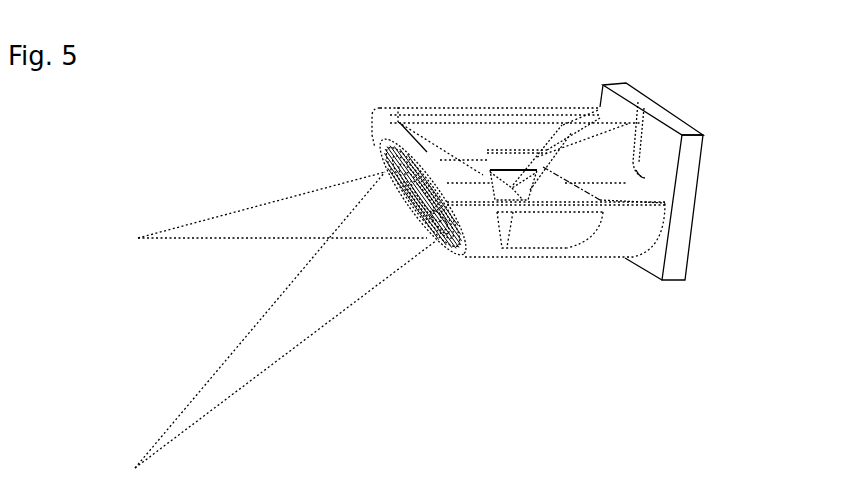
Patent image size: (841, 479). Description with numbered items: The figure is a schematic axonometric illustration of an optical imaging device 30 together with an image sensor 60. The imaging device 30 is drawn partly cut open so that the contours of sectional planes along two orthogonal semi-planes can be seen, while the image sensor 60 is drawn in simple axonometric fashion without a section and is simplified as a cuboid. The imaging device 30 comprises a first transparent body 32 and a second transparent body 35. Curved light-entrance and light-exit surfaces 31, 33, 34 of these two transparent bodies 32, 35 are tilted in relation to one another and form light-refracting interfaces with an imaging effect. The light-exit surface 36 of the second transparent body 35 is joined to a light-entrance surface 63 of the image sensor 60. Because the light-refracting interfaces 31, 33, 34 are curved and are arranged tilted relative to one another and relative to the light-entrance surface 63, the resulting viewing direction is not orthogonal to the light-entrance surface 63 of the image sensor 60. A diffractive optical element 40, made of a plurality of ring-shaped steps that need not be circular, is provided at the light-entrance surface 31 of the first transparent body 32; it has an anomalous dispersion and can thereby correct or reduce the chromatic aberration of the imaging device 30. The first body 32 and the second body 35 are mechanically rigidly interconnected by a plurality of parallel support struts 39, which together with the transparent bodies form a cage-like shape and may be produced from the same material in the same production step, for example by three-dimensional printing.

The optical imaging device 30 is at (557, 330).
The light-entrance surface 31 is at (385, 160).
The first transparent body 32 is at (400, 122).
The light-exit surface 33 is at (493, 172).
The light-entrance surface 34 is at (538, 182).
The second transparent body 35 is at (572, 130).
The light-exit surface 36 is at (648, 194).
The support struts 39 is at (520, 178).
The diffractive optical element 40 is at (437, 203).
The image sensor 60 is at (677, 122).
The light-entrance surface 63 is at (637, 117).